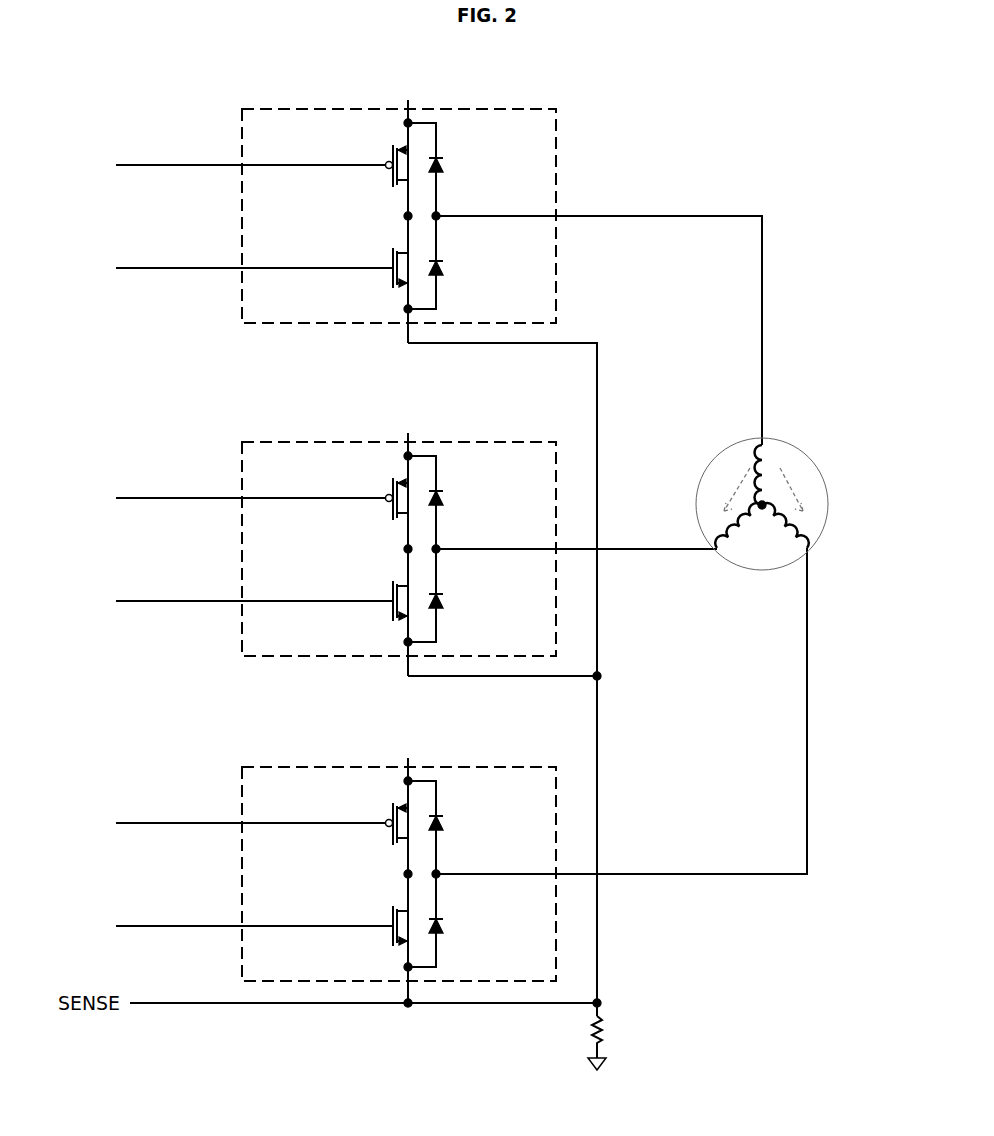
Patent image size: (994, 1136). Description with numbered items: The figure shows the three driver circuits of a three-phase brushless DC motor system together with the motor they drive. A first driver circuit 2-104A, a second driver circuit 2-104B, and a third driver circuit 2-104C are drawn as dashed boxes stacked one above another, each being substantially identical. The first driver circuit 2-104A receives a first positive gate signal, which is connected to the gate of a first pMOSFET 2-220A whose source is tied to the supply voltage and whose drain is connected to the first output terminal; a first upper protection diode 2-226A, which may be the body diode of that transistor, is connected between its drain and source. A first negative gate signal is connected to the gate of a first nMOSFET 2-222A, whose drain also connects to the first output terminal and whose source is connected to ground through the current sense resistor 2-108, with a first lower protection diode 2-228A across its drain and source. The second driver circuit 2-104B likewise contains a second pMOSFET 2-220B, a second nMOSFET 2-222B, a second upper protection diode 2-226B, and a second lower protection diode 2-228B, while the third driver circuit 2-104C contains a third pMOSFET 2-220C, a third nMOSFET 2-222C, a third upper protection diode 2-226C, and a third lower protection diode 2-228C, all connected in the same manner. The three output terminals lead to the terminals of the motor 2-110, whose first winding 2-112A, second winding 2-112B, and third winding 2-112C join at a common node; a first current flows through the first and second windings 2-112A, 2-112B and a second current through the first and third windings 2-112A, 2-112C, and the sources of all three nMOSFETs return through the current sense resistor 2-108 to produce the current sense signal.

The first driver circuit 2-104A is at (313, 108).
The second driver circuit 2-104B is at (309, 536).
The third driver circuit 2-104C is at (309, 862).
The first pMOSFET 2-220A is at (392, 150).
The second pMOSFET 2-220B is at (350, 491).
The third pMOSFET 2-220C is at (350, 816).
The first nMOSFET 2-222A is at (392, 252).
The second nMOSFET 2-222B is at (350, 591).
The third nMOSFET 2-222C is at (350, 916).
The first upper protection diode 2-226A is at (443, 165).
The second upper protection diode 2-226B is at (482, 498).
The third upper protection diode 2-226C is at (482, 823).
The first lower protection diode 2-228A is at (443, 268).
The second lower protection diode 2-228B is at (484, 601).
The third lower protection diode 2-228C is at (484, 926).
The motor 2-110 is at (738, 440).
The first winding 2-112A is at (770, 453).
The second winding 2-112B is at (717, 533).
The third winding 2-112C is at (800, 537).
The current sense resistor 2-108 is at (605, 1030).